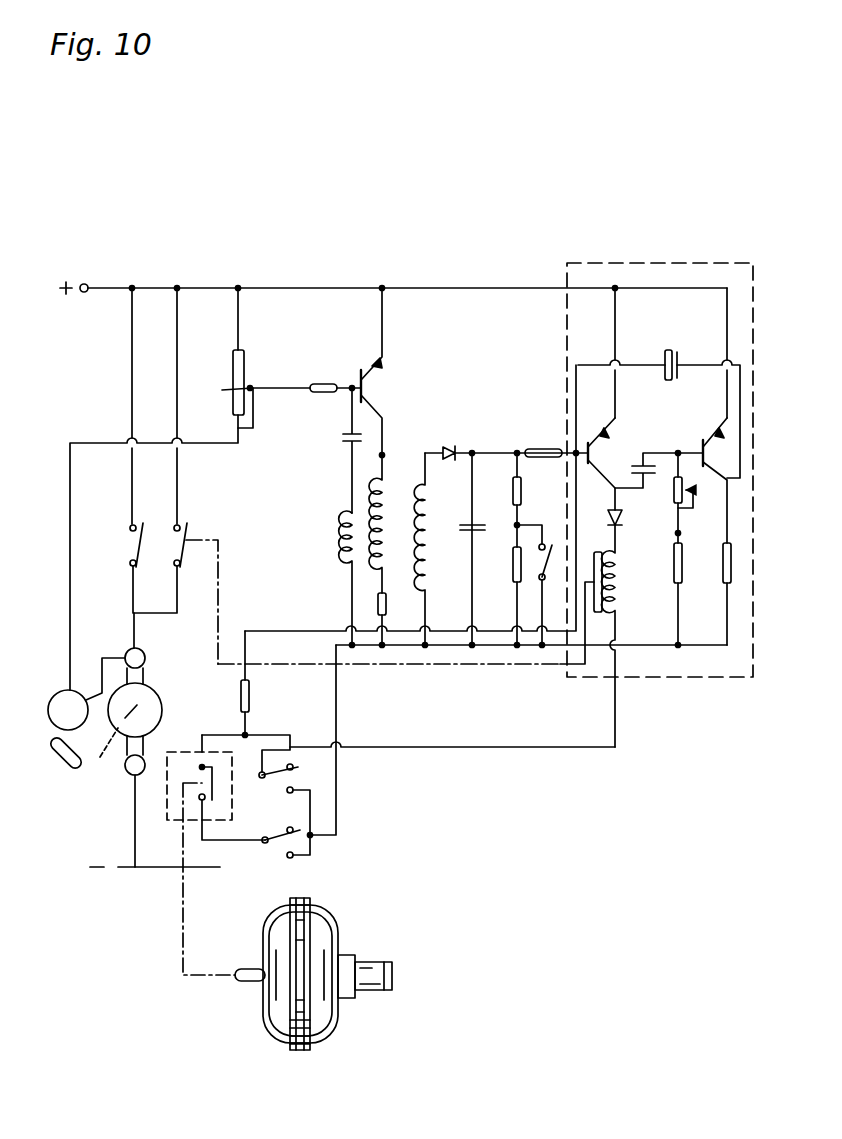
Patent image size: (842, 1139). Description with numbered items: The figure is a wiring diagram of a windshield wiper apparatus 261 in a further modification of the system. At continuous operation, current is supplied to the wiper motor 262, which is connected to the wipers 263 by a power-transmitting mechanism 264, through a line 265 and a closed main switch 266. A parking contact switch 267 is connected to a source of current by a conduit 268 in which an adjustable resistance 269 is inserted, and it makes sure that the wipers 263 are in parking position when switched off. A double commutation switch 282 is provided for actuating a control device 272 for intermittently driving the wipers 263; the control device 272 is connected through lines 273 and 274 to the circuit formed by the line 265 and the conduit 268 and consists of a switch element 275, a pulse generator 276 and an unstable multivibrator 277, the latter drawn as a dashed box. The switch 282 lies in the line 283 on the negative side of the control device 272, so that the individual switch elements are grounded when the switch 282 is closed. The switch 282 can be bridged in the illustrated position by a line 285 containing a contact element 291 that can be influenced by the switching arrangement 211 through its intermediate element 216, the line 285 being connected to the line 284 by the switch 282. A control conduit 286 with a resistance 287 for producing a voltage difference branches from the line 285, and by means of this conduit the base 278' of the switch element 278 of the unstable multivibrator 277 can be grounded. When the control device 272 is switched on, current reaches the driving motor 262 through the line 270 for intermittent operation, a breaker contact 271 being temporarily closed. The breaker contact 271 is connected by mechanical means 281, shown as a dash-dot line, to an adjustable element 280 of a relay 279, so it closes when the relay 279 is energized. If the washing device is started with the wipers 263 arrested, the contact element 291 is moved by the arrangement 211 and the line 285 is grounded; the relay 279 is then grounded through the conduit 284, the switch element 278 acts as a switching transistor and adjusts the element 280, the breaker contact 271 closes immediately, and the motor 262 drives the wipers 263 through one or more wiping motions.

The windshield wiper apparatus 261 is at (153, 266).
The line 270 is at (176, 332).
The adjustable resistance 269 is at (226, 383).
The line 273 is at (273, 286).
The line 274 is at (303, 384).
The switch element 275 is at (367, 381).
The base 278' is at (532, 326).
The control device 272 is at (531, 280).
The switch element 278 is at (653, 424).
The conduit 268 is at (68, 493).
The breaker contact 271 is at (143, 537).
The main switch 266 is at (133, 548).
The line 265 is at (131, 590).
The parking contact switch 267 is at (57, 689).
The wiper motor 262 is at (164, 704).
The wipers 263 is at (64, 760).
The power-transmitting mechanism 264 is at (99, 760).
The contact element 291 is at (162, 795).
The control conduit 286 is at (289, 629).
The resistance 287 is at (251, 697).
The line 285 is at (269, 735).
The line 283 is at (340, 786).
The pulse generator 276 is at (410, 687).
The conduit 284 is at (486, 750).
The mechanical means 281 is at (559, 668).
The adjustable element 280 is at (598, 612).
The relay 279 is at (621, 585).
The unstable multivibrator 277 is at (710, 682).
The double commutation switch 282 is at (283, 846).
The intermediate element 216 is at (248, 968).
The arrangement 211 is at (253, 990).